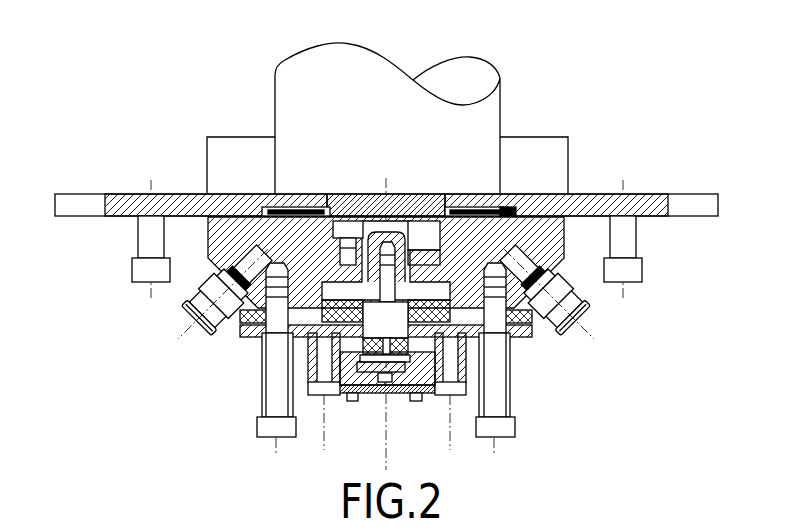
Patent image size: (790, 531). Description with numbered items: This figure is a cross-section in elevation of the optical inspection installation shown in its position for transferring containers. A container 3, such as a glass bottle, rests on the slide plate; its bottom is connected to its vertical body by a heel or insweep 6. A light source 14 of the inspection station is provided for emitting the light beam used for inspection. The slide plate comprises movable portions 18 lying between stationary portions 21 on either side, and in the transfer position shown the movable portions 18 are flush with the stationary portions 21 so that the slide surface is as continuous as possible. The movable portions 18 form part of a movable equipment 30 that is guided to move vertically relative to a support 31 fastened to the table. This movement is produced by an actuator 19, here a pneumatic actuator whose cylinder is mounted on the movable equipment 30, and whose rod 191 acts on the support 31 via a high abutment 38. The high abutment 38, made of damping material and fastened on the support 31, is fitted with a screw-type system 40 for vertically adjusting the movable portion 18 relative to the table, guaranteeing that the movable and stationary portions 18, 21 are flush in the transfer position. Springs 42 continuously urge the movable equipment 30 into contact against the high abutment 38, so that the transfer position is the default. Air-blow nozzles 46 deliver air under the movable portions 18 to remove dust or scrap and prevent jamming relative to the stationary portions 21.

The container 3 is at (370, 75).
The light source 14 is at (232, 138).
The stationary portions of the slide plate 21 is at (125, 193).
The movable portion of the slide plate 18 is at (302, 195).
The vertical adjustment system 40 is at (395, 243).
The heel or insweep 6 is at (503, 200).
The air-blow nozzle 46 is at (252, 245).
The support 31 is at (558, 243).
The high abutment 38 is at (330, 343).
The springs 42 is at (258, 400).
The actuator 19 is at (345, 397).
The rod of the actuator 191 is at (403, 397).
The movable equipment 30 is at (437, 409).